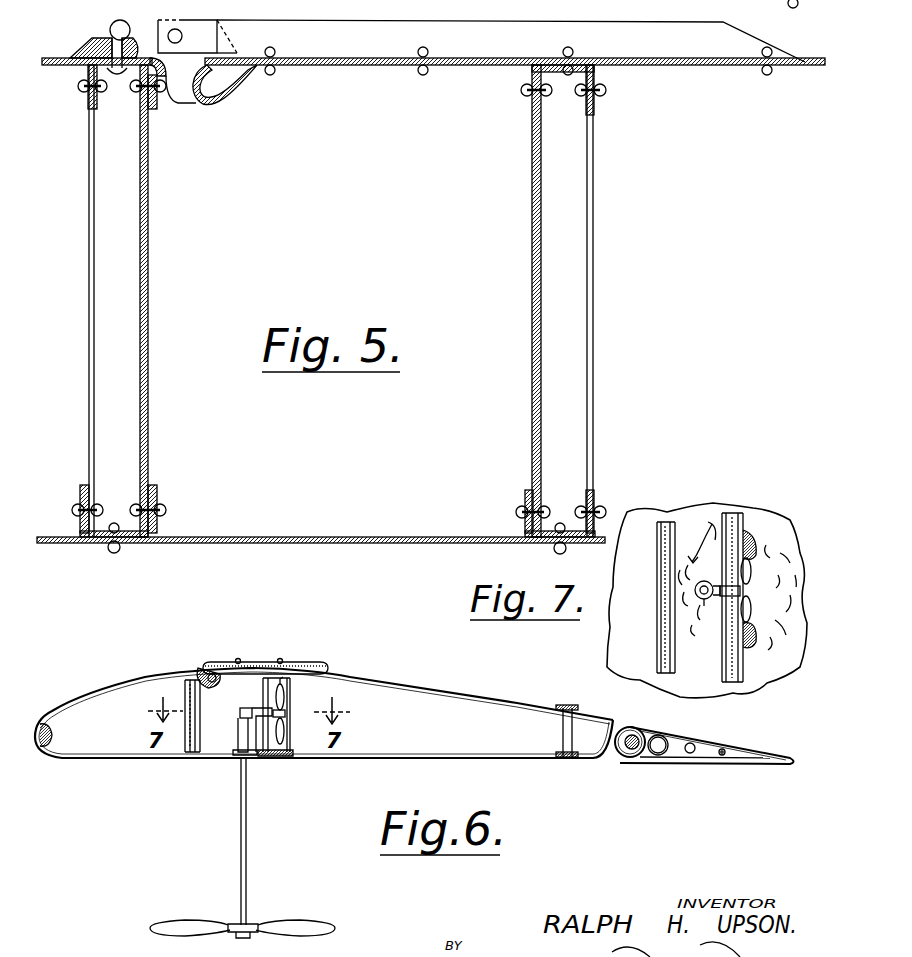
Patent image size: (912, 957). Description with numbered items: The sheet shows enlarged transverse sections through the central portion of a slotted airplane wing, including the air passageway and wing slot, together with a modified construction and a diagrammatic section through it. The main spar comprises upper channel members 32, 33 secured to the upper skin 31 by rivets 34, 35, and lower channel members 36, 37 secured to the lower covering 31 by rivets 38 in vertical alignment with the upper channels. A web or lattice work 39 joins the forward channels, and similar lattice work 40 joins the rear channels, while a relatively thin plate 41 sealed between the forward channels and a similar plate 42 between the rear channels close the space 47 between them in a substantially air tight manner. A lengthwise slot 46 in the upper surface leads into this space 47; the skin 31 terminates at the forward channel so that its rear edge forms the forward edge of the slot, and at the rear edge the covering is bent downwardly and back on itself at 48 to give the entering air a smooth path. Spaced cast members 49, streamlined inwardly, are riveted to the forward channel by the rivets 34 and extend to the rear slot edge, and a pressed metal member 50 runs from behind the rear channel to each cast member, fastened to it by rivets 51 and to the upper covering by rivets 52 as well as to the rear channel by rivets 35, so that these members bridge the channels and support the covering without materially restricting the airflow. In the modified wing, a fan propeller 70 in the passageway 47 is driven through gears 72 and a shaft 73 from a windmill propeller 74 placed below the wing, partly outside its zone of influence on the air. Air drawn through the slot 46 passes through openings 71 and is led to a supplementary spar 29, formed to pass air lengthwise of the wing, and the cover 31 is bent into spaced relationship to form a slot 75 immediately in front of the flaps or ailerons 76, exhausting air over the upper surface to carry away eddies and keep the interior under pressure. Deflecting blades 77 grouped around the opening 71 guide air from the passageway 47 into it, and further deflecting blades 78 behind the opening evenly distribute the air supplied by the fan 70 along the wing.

In FIG. 6, the supplementary spar 29 is at (560, 706).
In FIG. 5, the skin covering 31 is at (68, 60).
In FIG. 6, the skin covering 31 is at (606, 716).
In FIG. 5, the upper channel member 32 is at (88, 98).
In FIG. 5, the upper channel member 33 is at (597, 112).
In FIG. 5, the rivets 34 is at (112, 30).
In FIG. 5, the rivets 35 is at (572, 54).
In FIG. 5, the lower channel member 36 is at (95, 545).
In FIG. 5, the lower channel member 37 is at (526, 531).
In FIG. 5, the rivets 38 is at (116, 553).
In FIG. 5, the web or lattice work 39 is at (89, 350).
In FIG. 5, the lattice work 40 is at (590, 308).
In FIG. 5, the plate 41 is at (148, 232).
In FIG. 6, the plate 42 is at (286, 758).
In FIG. 7, the plate 42 is at (745, 540).
In FIG. 5, the slot 46 is at (188, 66).
In FIG. 6, the slot 46 is at (200, 672).
In FIG. 5, the space or duct 47 is at (316, 263).
In FIG. 6, the space or duct 47 is at (220, 738).
In FIG. 7, the space or duct 47 is at (678, 606).
In FIG. 5, the bent covering edge 48 is at (218, 98).
In FIG. 5, the cast members 49 is at (140, 35).
In FIG. 5, the pressed metal member 50 is at (510, 30).
In FIG. 5, the rivets 51 is at (180, 32).
In FIG. 5, the rivets 52 is at (272, 56).
In FIG. 6, the fan propeller 70 is at (285, 735).
In FIG. 7, the fan propeller 70 is at (742, 612).
In FIG. 6, the openings 71 is at (285, 677).
In FIG. 7, the openings 71 is at (752, 545).
In FIG. 6, the gears 72 is at (243, 706).
In FIG. 7, the gears 72 is at (695, 590).
In FIG. 6, the shaft 73 is at (240, 804).
In FIG. 7, the shaft 73 is at (703, 600).
In FIG. 6, the windmill propeller 74 is at (283, 925).
In FIG. 6, the slot 75 is at (618, 724).
In FIG. 6, the flaps or ailerons 76 is at (682, 733).
In FIG. 7, the deflecting blades 77 is at (696, 574).
In FIG. 7, the deflecting blades 78 is at (780, 555).